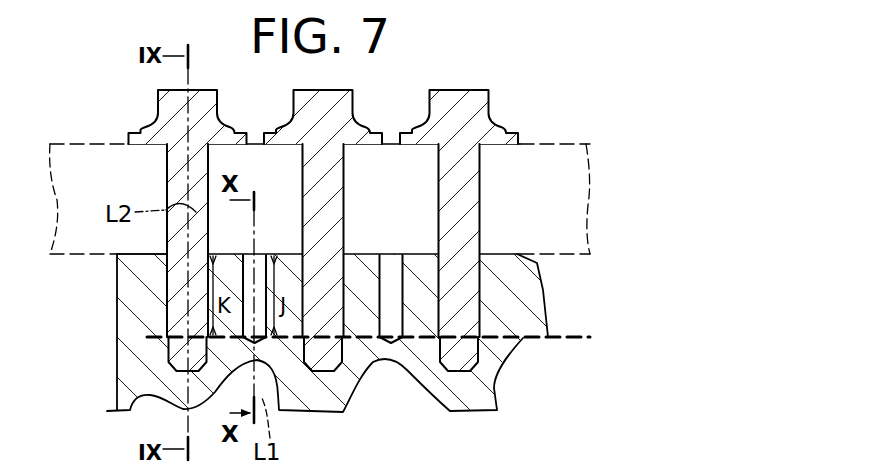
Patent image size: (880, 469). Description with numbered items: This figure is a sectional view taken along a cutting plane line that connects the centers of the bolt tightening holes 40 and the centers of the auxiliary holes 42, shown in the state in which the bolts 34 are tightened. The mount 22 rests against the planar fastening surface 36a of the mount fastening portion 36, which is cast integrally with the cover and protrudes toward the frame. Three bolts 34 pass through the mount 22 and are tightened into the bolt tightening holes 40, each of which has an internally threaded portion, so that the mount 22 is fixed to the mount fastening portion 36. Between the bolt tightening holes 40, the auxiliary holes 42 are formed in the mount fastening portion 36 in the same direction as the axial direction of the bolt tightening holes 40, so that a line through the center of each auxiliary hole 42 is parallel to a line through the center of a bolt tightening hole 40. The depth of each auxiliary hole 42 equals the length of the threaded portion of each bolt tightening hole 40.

The mount 22 is at (578, 208).
The bolt 34 is at (203, 103).
The mount fastening portion 36 is at (110, 349).
The fastening surface 36a is at (128, 254).
The bolt tightening hole 40 is at (208, 270).
The auxiliary hole 42 is at (260, 272).